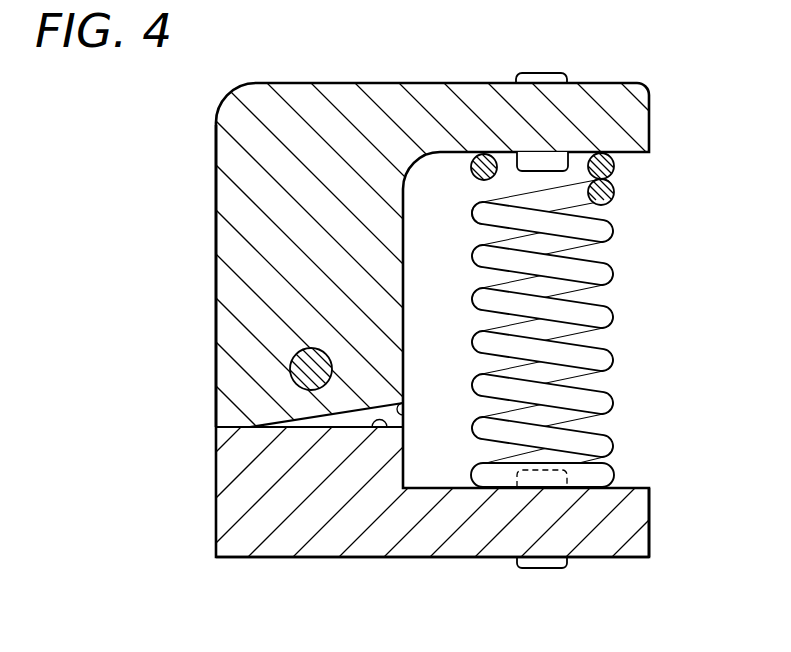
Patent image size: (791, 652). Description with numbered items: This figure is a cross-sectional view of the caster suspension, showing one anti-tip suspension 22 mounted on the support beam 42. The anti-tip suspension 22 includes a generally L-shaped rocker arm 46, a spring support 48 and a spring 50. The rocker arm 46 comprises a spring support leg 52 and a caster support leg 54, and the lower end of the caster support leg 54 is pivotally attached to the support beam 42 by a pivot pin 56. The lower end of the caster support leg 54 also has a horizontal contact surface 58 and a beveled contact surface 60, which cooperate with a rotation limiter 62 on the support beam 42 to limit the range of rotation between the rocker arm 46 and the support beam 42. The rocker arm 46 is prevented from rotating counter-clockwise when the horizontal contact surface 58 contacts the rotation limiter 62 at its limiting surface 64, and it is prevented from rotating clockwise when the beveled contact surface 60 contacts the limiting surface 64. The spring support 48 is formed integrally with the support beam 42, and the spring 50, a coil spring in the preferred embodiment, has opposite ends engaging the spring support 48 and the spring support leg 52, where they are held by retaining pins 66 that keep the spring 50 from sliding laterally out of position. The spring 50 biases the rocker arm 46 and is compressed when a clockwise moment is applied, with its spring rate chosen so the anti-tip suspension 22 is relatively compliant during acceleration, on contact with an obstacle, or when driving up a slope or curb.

The anti-tip suspension 22 is at (184, 548).
The support beam 42 is at (279, 558).
The rocker arm 46 is at (217, 152).
The spring support 48 is at (630, 558).
The spring 50 is at (613, 318).
The spring support leg 52 is at (560, 72).
The caster support leg 54 is at (215, 408).
The pivot pin 56 is at (300, 369).
The horizontal contact surface 58 is at (216, 431).
The beveled contact surface 60 is at (405, 410).
The rotation limiter 62 is at (215, 483).
The limiting surface 64 is at (388, 428).
The retaining pins 66 is at (545, 178).